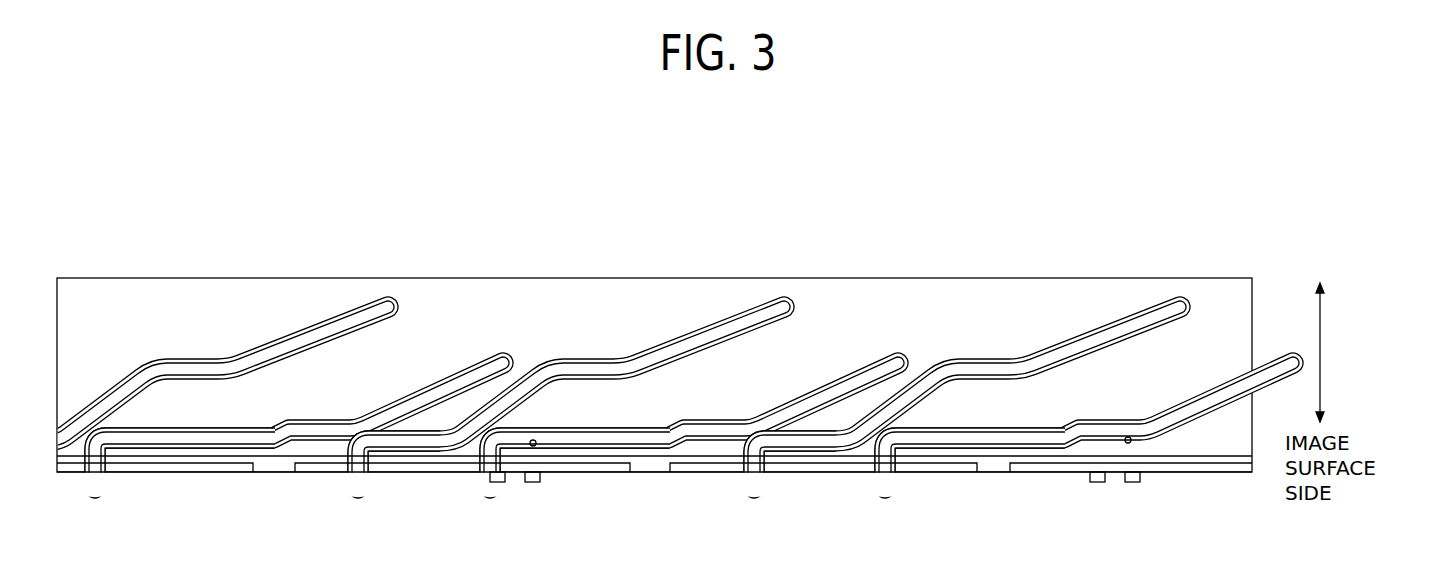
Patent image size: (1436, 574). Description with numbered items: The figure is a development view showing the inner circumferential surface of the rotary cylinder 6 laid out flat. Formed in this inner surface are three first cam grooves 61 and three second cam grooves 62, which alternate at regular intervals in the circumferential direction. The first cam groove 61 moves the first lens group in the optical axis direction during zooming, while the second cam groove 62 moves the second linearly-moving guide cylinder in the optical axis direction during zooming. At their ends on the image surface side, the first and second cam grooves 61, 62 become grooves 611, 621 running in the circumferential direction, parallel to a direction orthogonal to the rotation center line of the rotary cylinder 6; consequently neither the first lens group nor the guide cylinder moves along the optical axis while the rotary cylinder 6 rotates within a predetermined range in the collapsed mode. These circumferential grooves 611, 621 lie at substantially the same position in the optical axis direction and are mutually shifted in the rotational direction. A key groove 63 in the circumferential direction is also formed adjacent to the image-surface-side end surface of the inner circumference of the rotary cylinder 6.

The rotary cylinder 6 is at (749, 300).
The first cam groove 61 is at (348, 322).
The circumferential-direction groove 611 is at (406, 442).
The second cam groove 62 is at (470, 377).
The circumferential-direction groove 621 is at (143, 440).
The key groove 63 is at (228, 458).